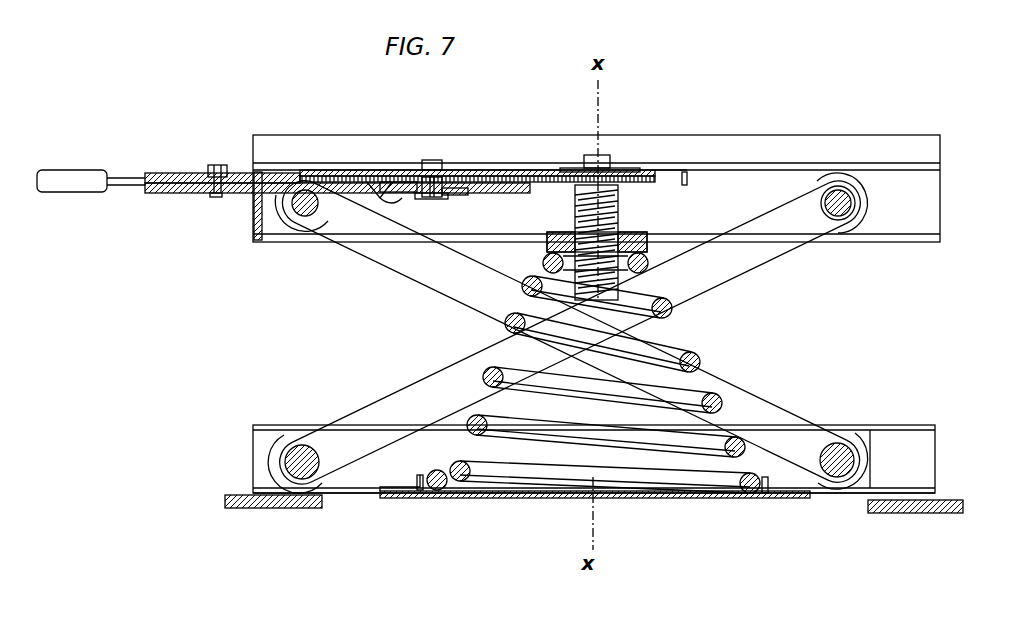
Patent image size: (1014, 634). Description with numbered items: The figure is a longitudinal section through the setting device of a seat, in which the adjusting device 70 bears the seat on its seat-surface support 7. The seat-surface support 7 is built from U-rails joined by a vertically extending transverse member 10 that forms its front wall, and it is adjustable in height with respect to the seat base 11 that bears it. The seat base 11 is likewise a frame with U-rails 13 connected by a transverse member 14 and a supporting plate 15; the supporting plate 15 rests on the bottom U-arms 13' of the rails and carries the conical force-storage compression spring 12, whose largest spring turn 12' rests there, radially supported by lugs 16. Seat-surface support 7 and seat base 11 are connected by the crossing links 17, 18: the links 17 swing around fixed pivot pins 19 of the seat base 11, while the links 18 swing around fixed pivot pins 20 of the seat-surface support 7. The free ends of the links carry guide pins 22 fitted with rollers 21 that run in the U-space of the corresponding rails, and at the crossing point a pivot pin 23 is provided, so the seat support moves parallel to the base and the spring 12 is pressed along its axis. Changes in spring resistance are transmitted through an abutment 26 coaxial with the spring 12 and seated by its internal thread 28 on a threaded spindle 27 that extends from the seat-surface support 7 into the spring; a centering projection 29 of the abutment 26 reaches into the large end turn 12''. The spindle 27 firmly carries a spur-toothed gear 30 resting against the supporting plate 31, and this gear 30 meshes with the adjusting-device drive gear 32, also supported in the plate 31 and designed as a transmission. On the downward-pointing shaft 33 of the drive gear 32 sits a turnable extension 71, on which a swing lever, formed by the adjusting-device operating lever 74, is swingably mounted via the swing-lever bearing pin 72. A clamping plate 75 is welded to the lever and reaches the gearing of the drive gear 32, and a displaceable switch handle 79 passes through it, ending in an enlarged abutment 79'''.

The seat-surface support 7 is at (942, 195).
The transverse member 10 is at (257, 232).
The seat base 11 is at (916, 423).
The conical force-storage compression spring 12 is at (606, 491).
The largest spring turn 12' is at (583, 514).
The end turn 12'' is at (627, 232).
The U-rails 13 is at (932, 445).
The bottom U-arms 13' is at (594, 530).
The transverse member 14 is at (267, 509).
The supporting plate 15 is at (512, 492).
The lugs 16 is at (765, 482).
The links 17 is at (758, 252).
The links 18 is at (772, 428).
The fixed pivot pins 19 is at (299, 445).
The fixed pivot pins 20 is at (305, 188).
The rollers 21 is at (857, 207).
The guide pins 22 is at (840, 198).
The pivot pin 23 is at (633, 332).
The abutment 26 is at (558, 232).
The threaded spindle 27 is at (598, 225).
The internal thread 28 is at (628, 233).
The centering projection 29 is at (552, 232).
The gear 30 is at (570, 230).
The supporting plate 31 is at (669, 175).
The adjusting-device drive gear 32 is at (330, 170).
The shaft 33 is at (430, 158).
The adjusting device 70 is at (742, 133).
The extension 71 is at (237, 192).
The swing-lever bearing pin 72 is at (372, 197).
The adjusting-device operating lever 74 is at (135, 185).
The clamping plate 75 is at (243, 177).
The switch handle 79 is at (206, 153).
The abutment 79''' is at (188, 239).